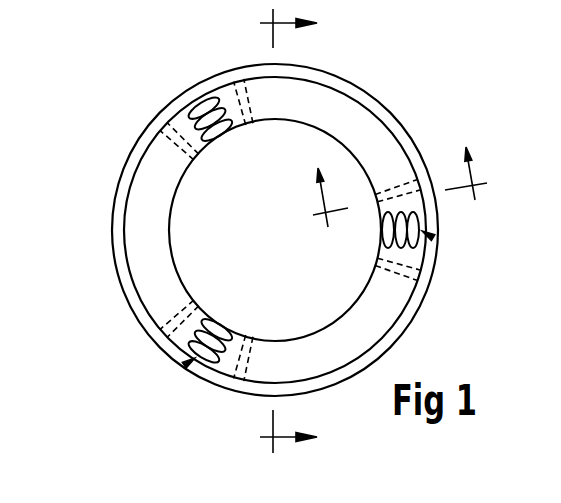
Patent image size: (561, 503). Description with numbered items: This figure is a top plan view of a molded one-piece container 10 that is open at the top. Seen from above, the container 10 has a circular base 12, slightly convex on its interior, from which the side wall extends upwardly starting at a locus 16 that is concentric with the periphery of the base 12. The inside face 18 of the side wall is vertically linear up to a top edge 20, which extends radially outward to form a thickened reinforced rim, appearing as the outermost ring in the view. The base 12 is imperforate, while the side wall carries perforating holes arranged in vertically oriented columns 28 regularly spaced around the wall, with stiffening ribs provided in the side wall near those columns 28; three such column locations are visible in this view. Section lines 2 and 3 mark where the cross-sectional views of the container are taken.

The container 10 is at (263, 232).
The circular base 12 is at (288, 241).
The locus 16 is at (172, 262).
The inside face 18 is at (356, 113).
The top edge 20 is at (386, 119).
The columns 28 is at (433, 238).
The section line 2- 2 is at (279, 231).
The section line 3- 3 is at (400, 201).